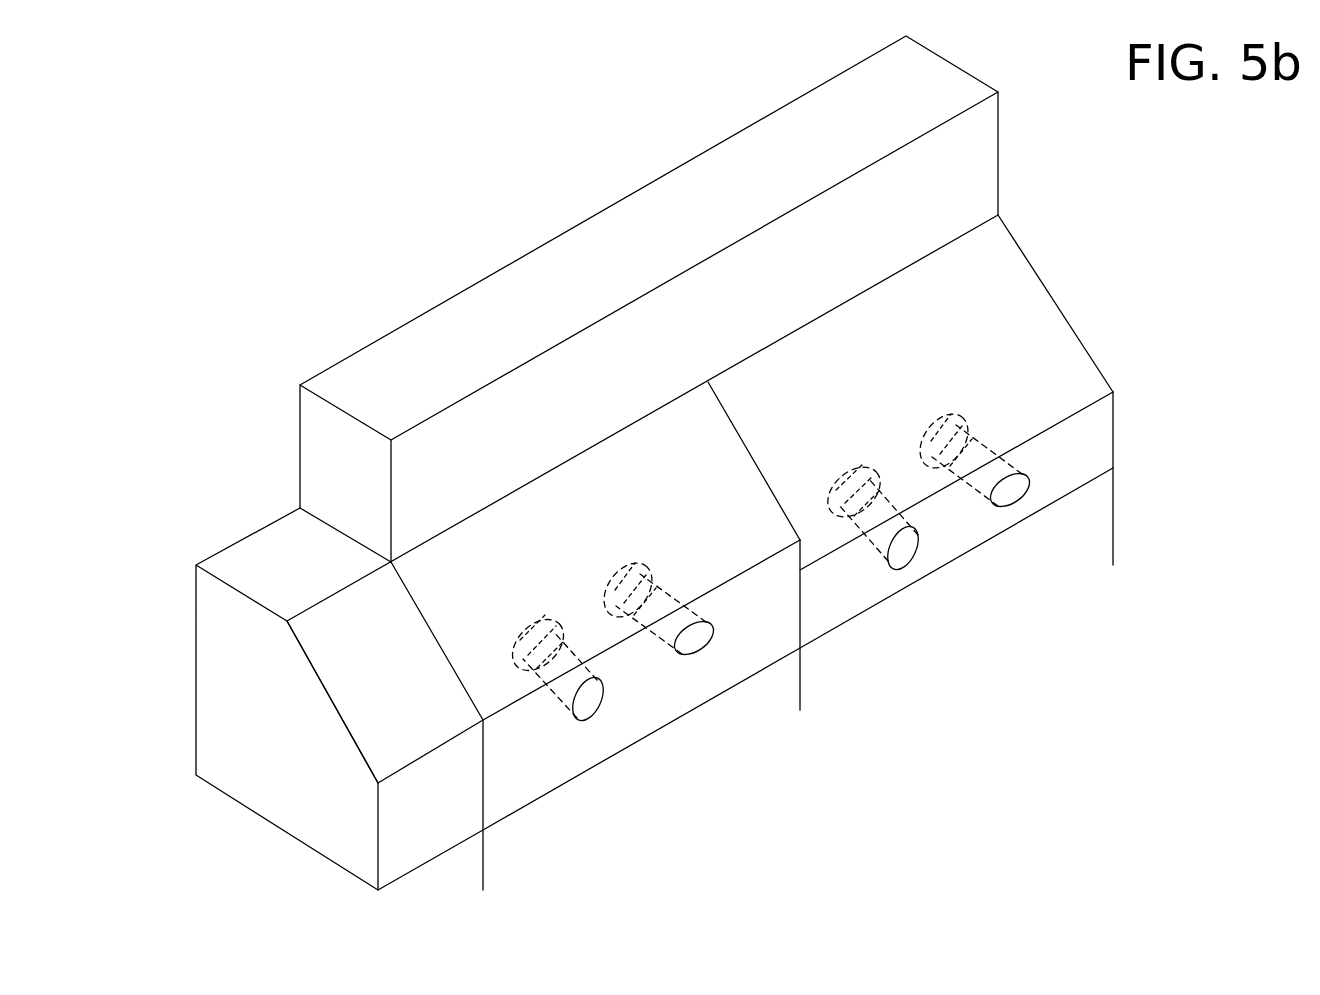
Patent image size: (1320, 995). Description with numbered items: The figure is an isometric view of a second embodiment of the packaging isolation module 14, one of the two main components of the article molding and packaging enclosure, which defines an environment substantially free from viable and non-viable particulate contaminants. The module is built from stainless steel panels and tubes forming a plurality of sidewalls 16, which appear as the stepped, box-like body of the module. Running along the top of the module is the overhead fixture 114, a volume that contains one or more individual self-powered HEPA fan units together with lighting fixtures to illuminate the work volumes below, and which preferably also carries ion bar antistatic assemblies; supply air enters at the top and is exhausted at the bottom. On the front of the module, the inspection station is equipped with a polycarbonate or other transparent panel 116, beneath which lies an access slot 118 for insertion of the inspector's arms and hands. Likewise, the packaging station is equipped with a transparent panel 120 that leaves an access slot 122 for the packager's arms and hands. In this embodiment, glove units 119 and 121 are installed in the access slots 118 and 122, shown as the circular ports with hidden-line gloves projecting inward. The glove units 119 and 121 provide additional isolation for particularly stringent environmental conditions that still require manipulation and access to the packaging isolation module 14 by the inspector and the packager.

The packaging isolation module 14 is at (636, 328).
The sidewalls 16 is at (693, 552).
The overhead fixture 114 is at (683, 333).
The transparent panel 116 is at (522, 560).
The access slot 118 is at (518, 783).
The glove unit 119 is at (695, 652).
The transparent panel 120 is at (988, 272).
The glove unit 121 is at (1010, 507).
The access slot 122 is at (1070, 437).